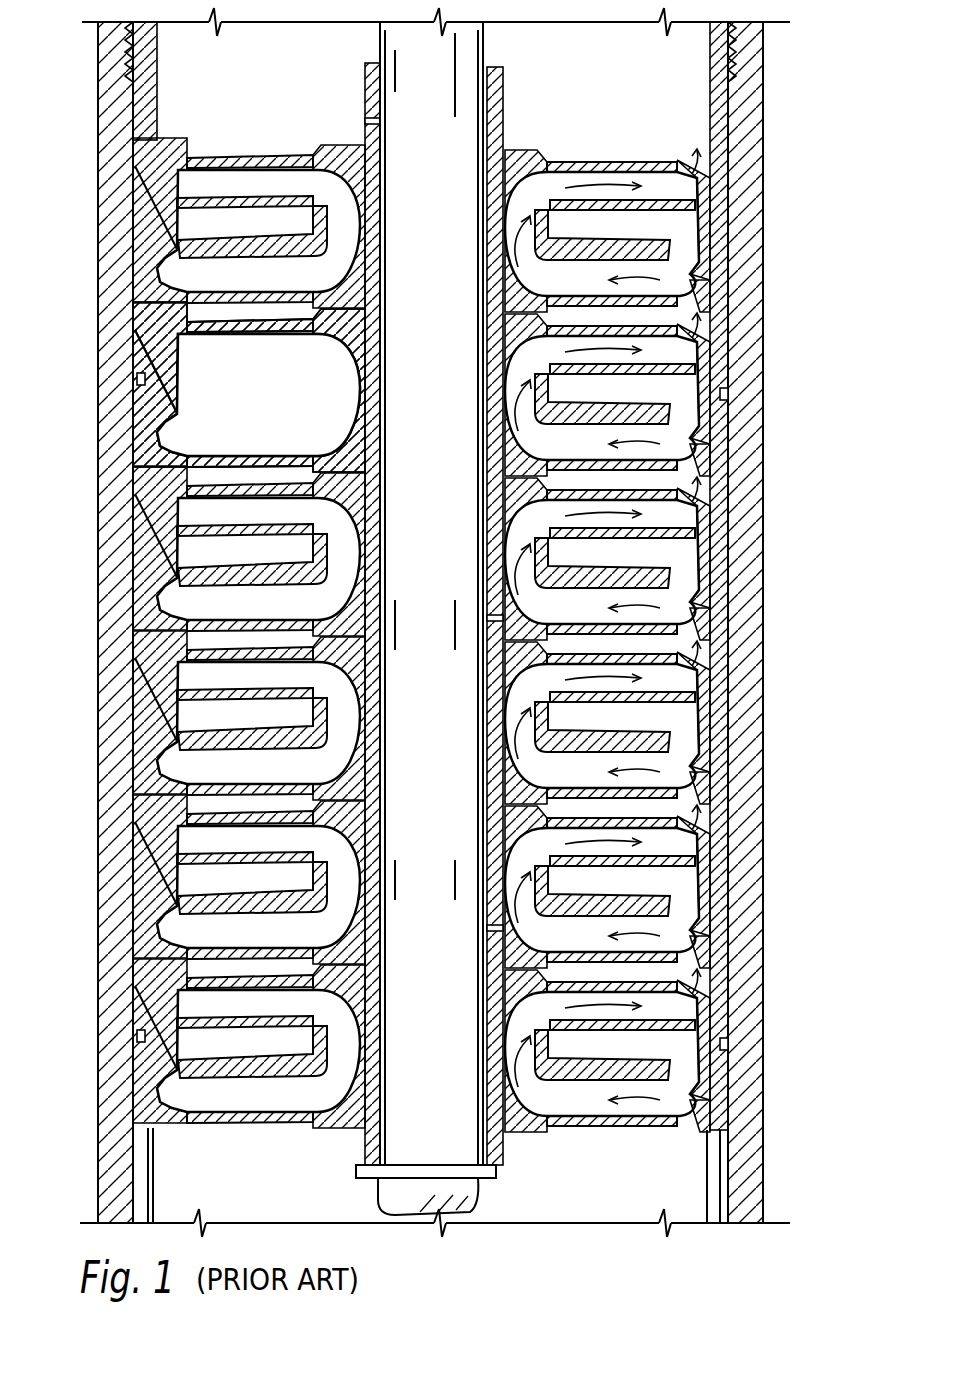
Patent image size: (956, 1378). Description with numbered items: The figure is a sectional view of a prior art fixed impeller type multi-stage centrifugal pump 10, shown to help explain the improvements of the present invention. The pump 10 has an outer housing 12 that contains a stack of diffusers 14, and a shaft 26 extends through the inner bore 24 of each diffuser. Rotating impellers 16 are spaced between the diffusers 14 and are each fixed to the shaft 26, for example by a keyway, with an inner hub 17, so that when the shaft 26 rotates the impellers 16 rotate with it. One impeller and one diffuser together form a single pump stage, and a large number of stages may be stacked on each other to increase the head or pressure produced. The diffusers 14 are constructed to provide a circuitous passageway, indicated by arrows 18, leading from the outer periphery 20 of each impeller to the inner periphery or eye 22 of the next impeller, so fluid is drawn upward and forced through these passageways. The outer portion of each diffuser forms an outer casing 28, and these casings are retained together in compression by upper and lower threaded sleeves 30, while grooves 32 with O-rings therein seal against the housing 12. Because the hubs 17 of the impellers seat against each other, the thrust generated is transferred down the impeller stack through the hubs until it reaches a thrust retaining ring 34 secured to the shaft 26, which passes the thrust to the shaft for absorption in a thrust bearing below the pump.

The fixed impeller type multi-stage centrifugal pump 10 is at (449, 622).
The outer housing 12 is at (745, 285).
The diffusers 14 is at (700, 410).
The rotating impellers 16 is at (372, 197).
The inner hub 17 is at (370, 120).
The arrows 18 is at (530, 355).
The outer periphery 20 is at (710, 555).
The inner periphery or eye 22 is at (350, 385).
The inner bore 24 is at (355, 432).
The shaft 26 is at (468, 50).
The outer casing 28 is at (720, 167).
The threaded sleeves 30 is at (735, 38).
The grooves 32 is at (125, 368).
The thrust retaining ring 34 is at (500, 1175).